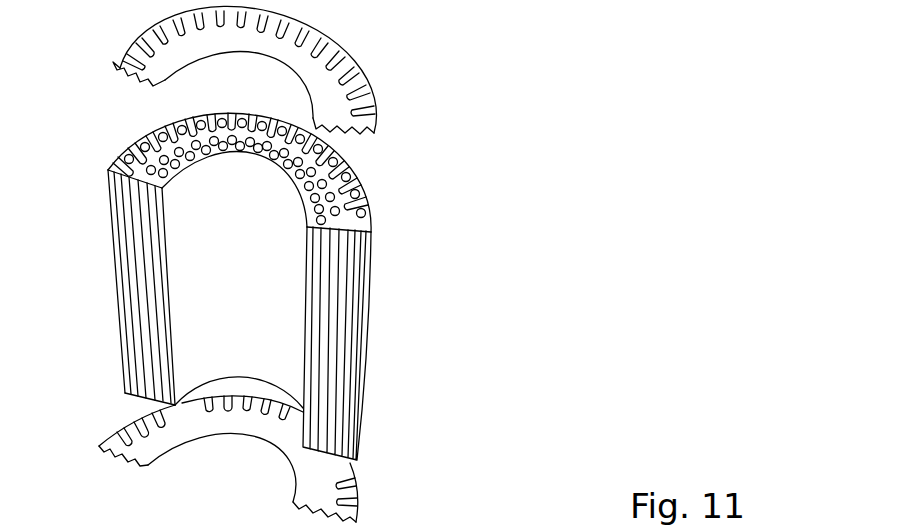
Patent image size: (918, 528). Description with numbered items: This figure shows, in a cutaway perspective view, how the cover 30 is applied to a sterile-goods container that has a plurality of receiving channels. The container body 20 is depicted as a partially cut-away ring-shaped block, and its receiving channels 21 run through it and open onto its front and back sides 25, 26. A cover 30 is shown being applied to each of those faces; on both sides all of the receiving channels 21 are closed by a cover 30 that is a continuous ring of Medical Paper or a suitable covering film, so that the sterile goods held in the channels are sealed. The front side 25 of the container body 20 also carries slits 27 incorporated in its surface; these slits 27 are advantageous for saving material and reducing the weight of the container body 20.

The container body 20 is at (250, 282).
The receiving channels 21 is at (352, 265).
The front side 25 is at (128, 170).
The back side 26 is at (125, 393).
The slits 27 is at (368, 207).
The cover 30 is at (357, 507).